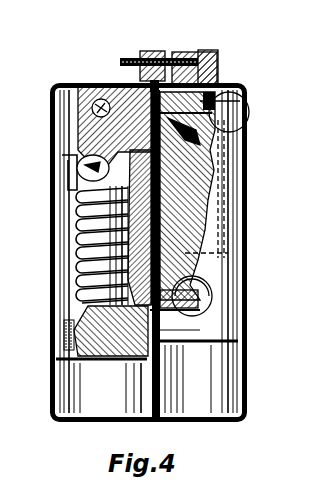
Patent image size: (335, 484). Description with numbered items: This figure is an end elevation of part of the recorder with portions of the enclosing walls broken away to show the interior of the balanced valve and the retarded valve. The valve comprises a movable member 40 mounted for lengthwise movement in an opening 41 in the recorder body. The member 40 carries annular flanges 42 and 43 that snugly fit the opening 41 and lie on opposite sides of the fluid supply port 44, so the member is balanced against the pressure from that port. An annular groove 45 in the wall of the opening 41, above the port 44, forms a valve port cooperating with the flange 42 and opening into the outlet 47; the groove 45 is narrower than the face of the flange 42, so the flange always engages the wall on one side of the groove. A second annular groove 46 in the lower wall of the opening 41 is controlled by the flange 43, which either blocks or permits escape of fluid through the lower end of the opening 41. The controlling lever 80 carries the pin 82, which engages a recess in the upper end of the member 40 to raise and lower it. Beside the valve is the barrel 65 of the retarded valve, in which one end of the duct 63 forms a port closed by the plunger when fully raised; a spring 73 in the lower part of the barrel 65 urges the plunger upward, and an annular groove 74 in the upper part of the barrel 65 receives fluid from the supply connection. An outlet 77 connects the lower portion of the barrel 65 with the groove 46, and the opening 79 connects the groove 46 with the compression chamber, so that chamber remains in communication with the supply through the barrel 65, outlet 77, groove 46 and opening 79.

The movable member 40 is at (218, 68).
The opening 41 is at (213, 345).
The annular flange 42 is at (187, 196).
The annular flange 43 is at (157, 227).
The fluid supply port 44 is at (183, 178).
The annular groove 45 is at (148, 84).
The annular groove 46 is at (230, 297).
The outlet 47 is at (220, 104).
The duct 63 is at (100, 100).
The barrel 65 is at (57, 242).
The spring 73 is at (108, 304).
The annular groove 74 is at (63, 167).
The outlet 77 is at (163, 346).
The opening 79 is at (178, 310).
The controlling lever 80 is at (147, 53).
The pin 82 is at (131, 57).